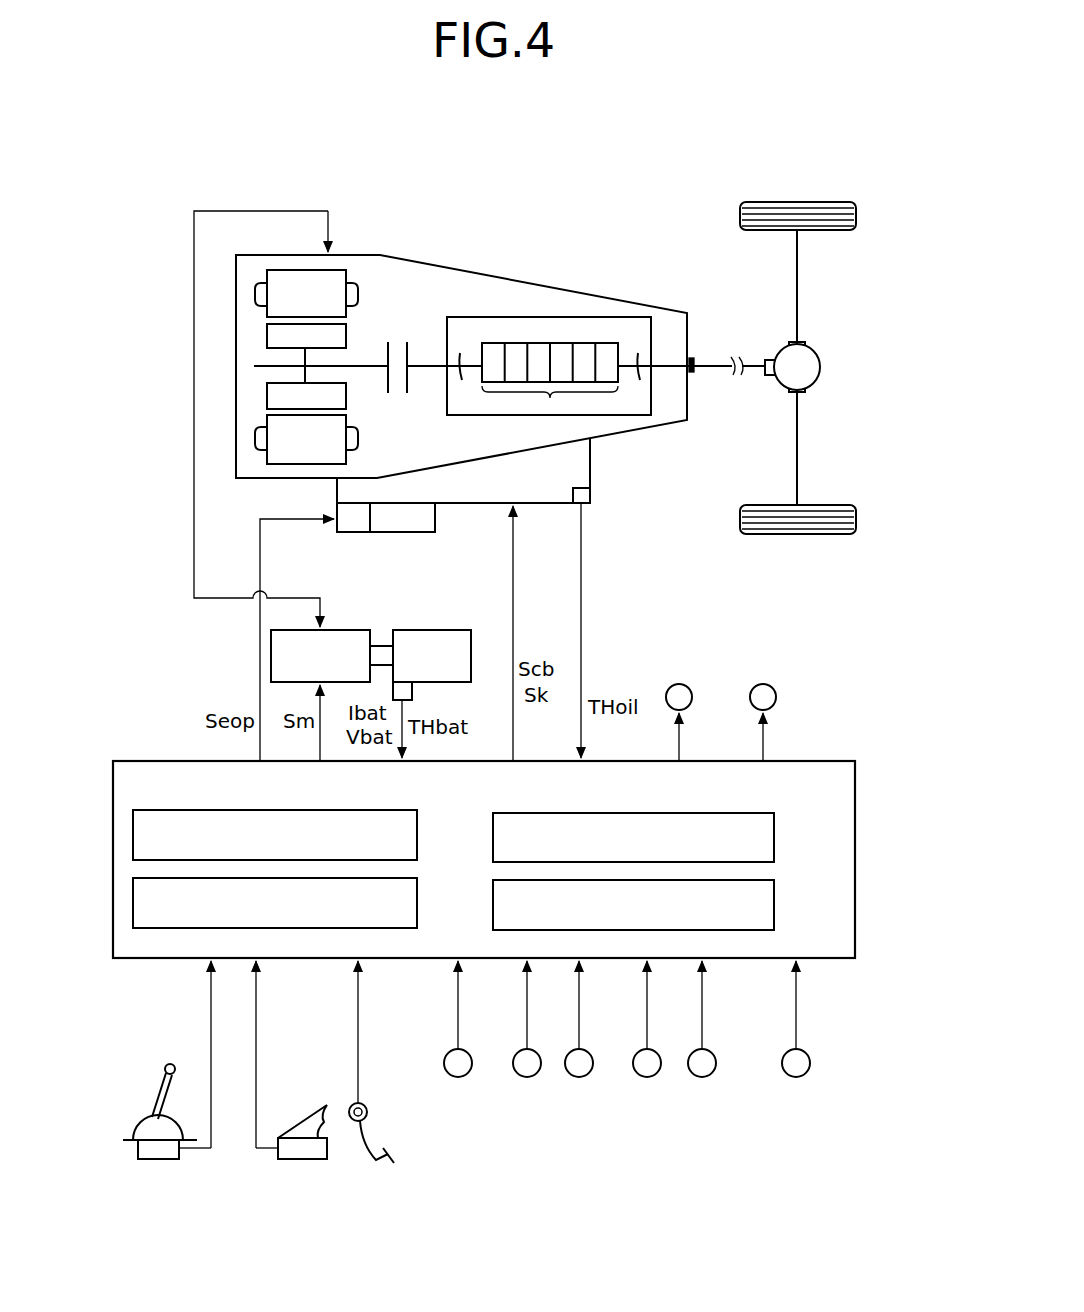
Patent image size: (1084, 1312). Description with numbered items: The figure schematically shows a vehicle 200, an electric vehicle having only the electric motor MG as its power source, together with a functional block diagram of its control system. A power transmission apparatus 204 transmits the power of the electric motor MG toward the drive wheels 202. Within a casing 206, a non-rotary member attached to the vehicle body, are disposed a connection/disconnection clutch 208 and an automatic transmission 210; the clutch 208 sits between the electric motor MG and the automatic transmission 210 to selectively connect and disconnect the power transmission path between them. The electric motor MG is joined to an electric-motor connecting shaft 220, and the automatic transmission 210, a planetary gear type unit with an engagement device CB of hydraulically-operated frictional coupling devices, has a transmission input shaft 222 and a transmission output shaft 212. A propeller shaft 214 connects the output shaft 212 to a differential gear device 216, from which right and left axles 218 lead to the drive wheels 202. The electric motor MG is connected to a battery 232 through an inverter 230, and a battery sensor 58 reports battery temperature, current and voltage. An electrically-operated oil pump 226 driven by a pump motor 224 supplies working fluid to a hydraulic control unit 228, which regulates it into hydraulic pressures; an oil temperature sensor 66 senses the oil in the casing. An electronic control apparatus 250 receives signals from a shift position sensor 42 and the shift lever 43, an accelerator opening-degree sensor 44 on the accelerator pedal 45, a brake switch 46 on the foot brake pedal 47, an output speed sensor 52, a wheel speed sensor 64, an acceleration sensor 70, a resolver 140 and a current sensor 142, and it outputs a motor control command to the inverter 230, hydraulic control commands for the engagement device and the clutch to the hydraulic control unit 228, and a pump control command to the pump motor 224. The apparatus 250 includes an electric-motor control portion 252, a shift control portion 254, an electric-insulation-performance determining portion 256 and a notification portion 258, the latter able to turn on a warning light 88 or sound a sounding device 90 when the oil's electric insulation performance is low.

The vehicle 200 is at (489, 145).
The power transmission apparatus 204 is at (446, 203).
The casing 206 is at (347, 256).
The connection/disconnection clutch 208 is at (383, 348).
The electric-motor connecting shaft 220 is at (367, 368).
The transmission input shaft 222 is at (459, 373).
The automatic transmission 210 is at (612, 330).
The transmission output shaft 212 is at (642, 372).
The propeller shaft 214 is at (722, 372).
The differential gear device 216 is at (806, 360).
The right and left axles 218 is at (798, 288).
The drive wheels 202 is at (741, 215).
The hydraulic control unit 228 is at (581, 450).
The oil temperature sensor 66 is at (590, 495).
The pump motor 224 is at (354, 523).
The electrically-operated oil pump 226 is at (402, 523).
The inverter 230 is at (328, 636).
The battery 232 is at (428, 640).
The battery sensor 58 is at (412, 691).
The warning light 88 is at (681, 690).
The sounding device 90 is at (765, 690).
The electronic control apparatus 250 is at (824, 772).
The electric-motor control portion 252 is at (417, 838).
The shift control portion 254 is at (774, 838).
The electric-insulation-performance determining portion 256 is at (417, 910).
The notification portion 258 is at (774, 908).
The shift position sensor 42 is at (138, 1152).
The shift lever 43 is at (160, 1089).
The accelerator opening-degree sensor 44 is at (303, 1150).
The accelerator pedal 45 is at (296, 1122).
The brake switch 46 is at (367, 1104).
The foot brake pedal 47 is at (392, 1152).
The output speed sensor 52 is at (457, 1068).
The wheel speed sensor 64 is at (526, 1068).
The acceleration sensor 70 is at (647, 1068).
The resolver 140 is at (701, 1068).
The current sensor 142 is at (795, 1068).